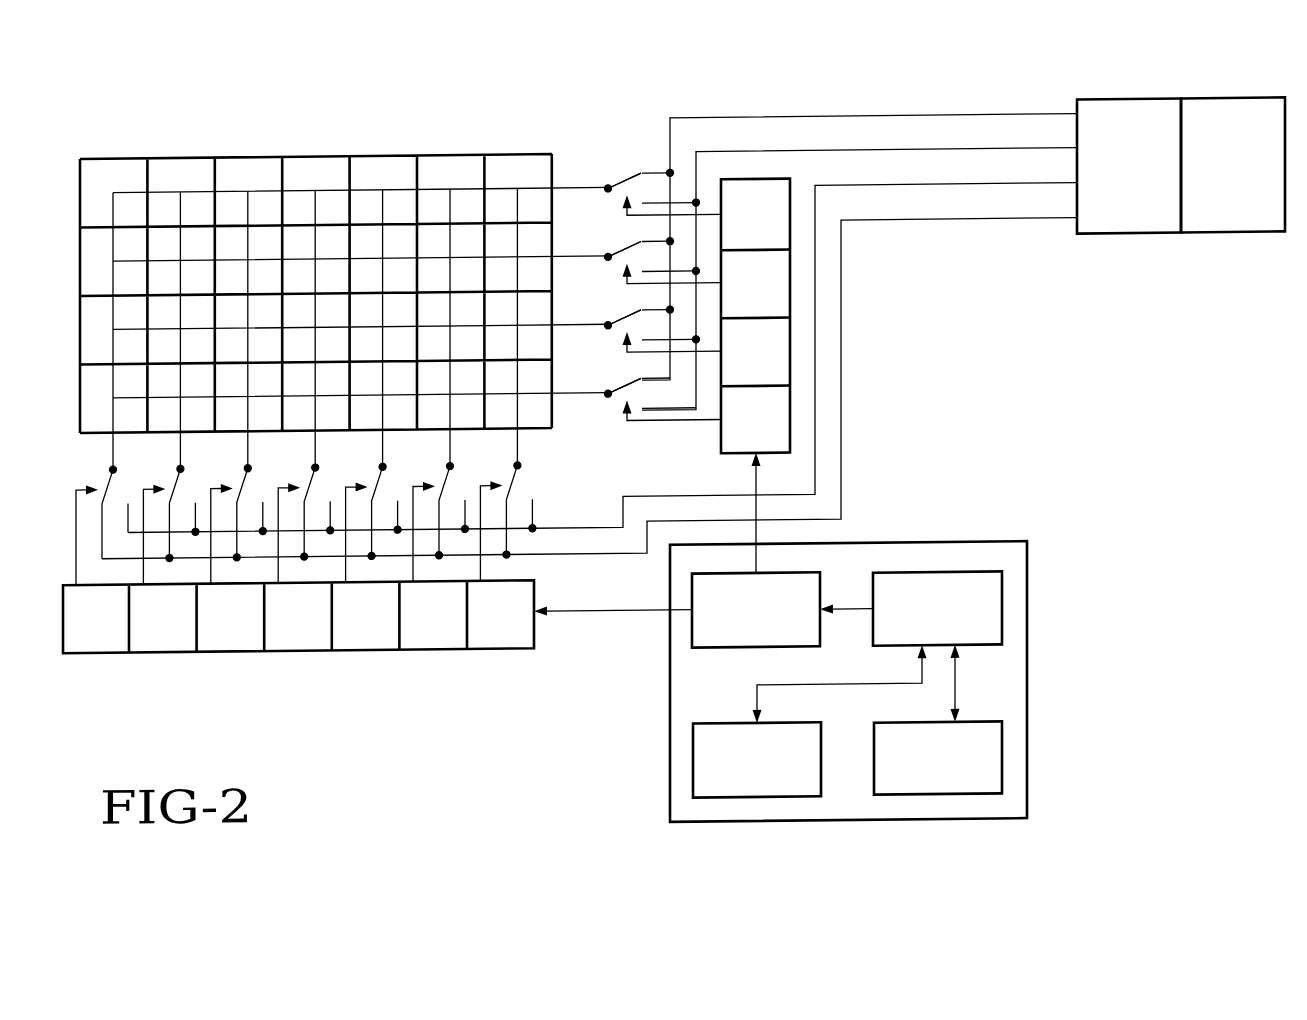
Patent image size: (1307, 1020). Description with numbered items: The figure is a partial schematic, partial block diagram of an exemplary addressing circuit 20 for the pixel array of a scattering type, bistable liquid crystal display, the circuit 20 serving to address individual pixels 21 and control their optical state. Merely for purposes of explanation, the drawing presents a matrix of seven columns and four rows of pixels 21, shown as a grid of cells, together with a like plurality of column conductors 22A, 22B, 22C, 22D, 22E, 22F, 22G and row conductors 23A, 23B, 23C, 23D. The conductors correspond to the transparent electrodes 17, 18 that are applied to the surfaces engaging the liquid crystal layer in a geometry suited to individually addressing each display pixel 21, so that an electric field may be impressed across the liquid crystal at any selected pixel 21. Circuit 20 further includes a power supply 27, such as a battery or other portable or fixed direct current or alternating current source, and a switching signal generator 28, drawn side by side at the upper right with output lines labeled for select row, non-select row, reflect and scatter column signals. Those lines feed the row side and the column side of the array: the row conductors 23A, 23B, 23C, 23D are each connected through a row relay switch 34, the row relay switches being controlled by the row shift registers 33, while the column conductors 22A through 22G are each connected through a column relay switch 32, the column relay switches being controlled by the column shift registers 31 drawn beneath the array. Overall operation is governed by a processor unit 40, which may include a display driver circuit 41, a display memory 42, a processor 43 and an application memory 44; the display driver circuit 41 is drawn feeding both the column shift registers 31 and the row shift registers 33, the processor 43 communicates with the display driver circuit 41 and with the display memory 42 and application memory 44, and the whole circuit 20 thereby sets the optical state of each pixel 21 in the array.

The transparent electrode 17 is at (565, 178).
The transparent electrode 18 is at (538, 454).
The addressing circuit 20 is at (514, 753).
The pixel 21 is at (115, 178).
The column conductor 22A is at (110, 467).
The column conductor 22B is at (177, 467).
The column conductor 22C is at (245, 467).
The column conductor 22D is at (312, 467).
The column conductor 22E is at (380, 467).
The column conductor 22F is at (447, 467).
The column conductor 22G is at (514, 467).
The row conductor 23A is at (607, 190).
The row conductor 23B is at (607, 258).
The row conductor 23C is at (607, 327).
The row conductor 23D is at (607, 395).
The power supply 27 is at (1230, 110).
The switching signal generator 28 is at (1142, 110).
The column shift registers 31 is at (360, 654).
The column relay switches 32 is at (533, 492).
The row shift registers 33 is at (721, 454).
The row relay switches 34 is at (634, 163).
The processor unit 40 is at (819, 829).
The display driver circuit 41 is at (712, 654).
The display memory 42 is at (693, 767).
The processor 43 is at (935, 581).
The application memory 44 is at (937, 803).